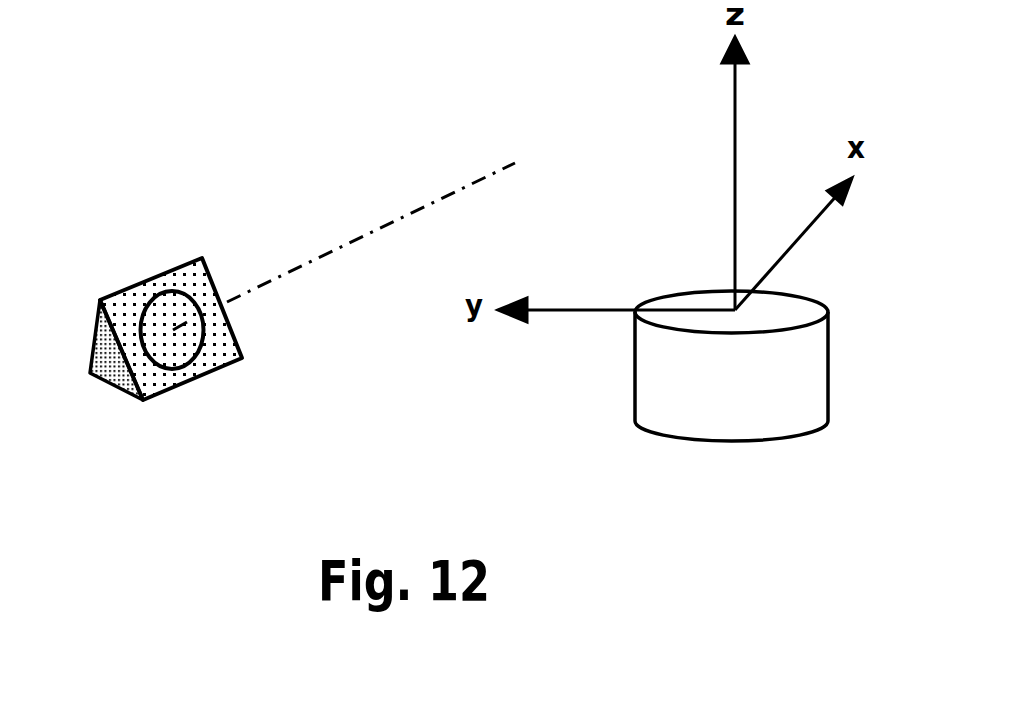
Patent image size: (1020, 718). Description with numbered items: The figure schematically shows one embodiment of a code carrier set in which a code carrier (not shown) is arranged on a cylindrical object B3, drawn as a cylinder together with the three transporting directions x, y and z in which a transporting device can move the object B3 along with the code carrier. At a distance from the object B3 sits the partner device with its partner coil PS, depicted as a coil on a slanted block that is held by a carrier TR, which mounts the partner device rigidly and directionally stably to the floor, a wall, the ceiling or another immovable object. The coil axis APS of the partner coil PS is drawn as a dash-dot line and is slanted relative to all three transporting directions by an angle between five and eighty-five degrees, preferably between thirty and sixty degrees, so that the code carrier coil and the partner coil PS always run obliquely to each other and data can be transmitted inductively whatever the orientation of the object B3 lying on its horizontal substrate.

The carrier TR is at (105, 384).
The partner coil PS is at (228, 380).
The coil axis of the partner coil APS is at (414, 212).
The object B3 is at (730, 395).